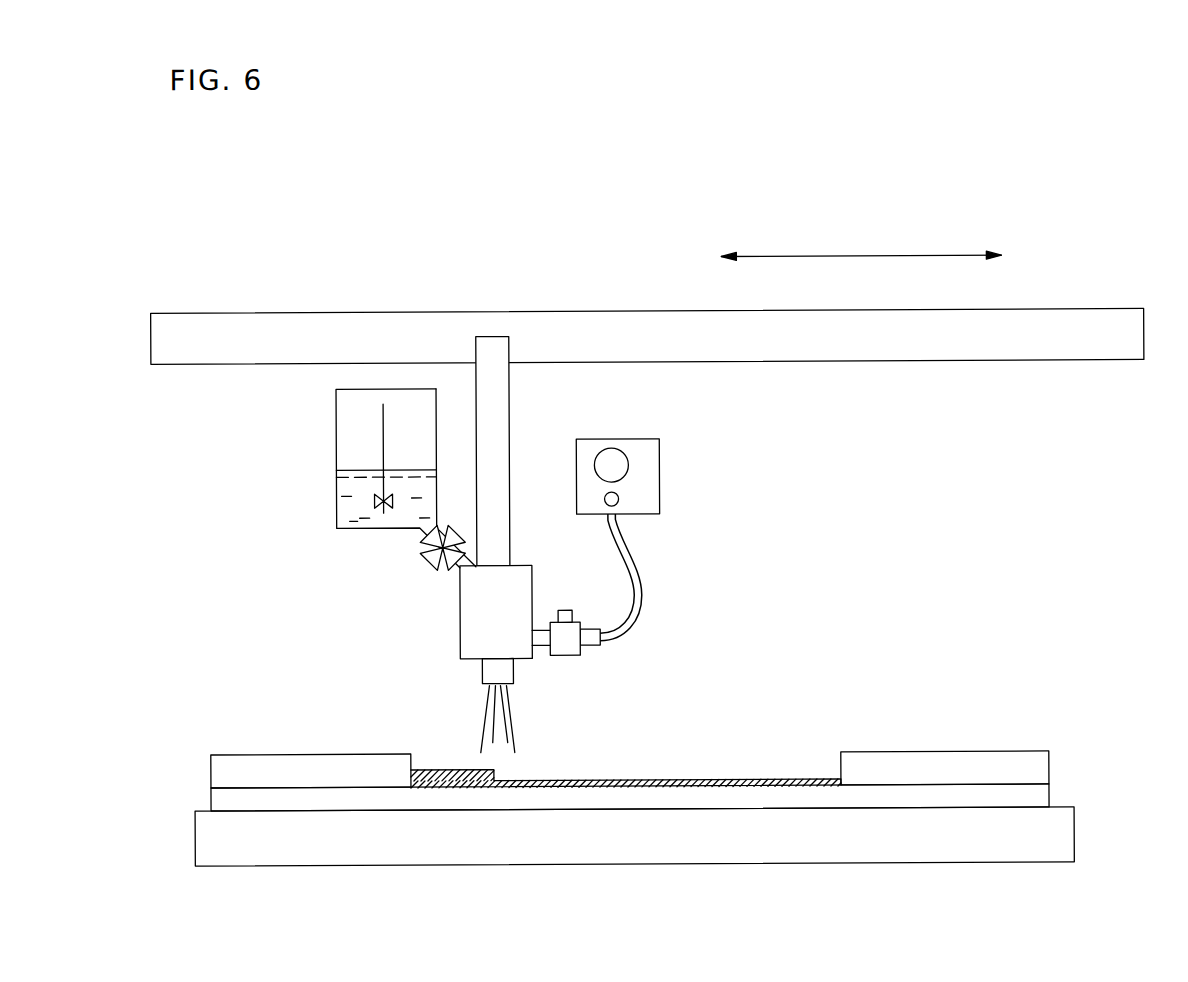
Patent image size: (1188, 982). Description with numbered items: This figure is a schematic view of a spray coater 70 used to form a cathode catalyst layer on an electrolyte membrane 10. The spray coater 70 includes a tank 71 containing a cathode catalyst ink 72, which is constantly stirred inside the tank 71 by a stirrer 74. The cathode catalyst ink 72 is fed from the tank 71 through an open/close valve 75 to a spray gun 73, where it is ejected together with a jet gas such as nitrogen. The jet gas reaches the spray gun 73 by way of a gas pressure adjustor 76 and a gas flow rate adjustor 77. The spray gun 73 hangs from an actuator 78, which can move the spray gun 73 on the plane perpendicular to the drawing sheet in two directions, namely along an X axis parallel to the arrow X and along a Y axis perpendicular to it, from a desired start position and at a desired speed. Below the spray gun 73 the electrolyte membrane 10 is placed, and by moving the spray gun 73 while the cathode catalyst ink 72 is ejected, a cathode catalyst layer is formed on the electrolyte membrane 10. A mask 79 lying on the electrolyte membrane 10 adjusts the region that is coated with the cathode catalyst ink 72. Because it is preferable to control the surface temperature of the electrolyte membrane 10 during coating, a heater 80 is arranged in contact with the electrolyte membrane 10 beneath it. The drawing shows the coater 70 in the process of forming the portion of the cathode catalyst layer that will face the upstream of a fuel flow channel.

The spray coater 70 is at (1100, 273).
The actuator 78 is at (280, 326).
The spray gun 73 is at (477, 623).
The tank 71 is at (337, 449).
The cathode catalyst ink 72 is at (356, 500).
The stirrer 74 is at (383, 420).
The open/close valve 75 is at (428, 557).
The gas pressure adjustor 76 is at (647, 457).
The gas flow rate adjustor 77 is at (567, 643).
The mask 79 is at (982, 770).
The electrolyte membrane 10 is at (1028, 798).
The heater 80 is at (1058, 832).